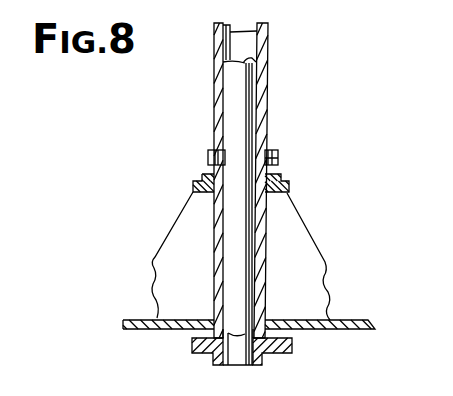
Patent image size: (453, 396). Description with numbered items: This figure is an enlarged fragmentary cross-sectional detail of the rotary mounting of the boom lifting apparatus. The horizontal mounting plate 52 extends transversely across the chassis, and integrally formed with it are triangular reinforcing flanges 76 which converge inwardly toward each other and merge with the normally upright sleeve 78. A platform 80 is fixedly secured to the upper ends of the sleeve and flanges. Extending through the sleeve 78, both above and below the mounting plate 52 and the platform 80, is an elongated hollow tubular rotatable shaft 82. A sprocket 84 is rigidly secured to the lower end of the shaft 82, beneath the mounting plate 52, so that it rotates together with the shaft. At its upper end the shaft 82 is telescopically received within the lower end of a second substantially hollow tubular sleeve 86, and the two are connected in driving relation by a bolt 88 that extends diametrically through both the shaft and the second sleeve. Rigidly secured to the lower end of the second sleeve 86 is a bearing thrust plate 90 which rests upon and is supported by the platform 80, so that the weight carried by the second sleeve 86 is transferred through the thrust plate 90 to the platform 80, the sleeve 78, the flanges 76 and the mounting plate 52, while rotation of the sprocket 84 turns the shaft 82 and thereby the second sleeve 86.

The mounting plate 52 is at (352, 320).
The triangular reinforcing flanges 76 is at (177, 238).
The sleeve 78 is at (217, 240).
The platform 80 is at (193, 185).
The hollow tubular rotatable shaft 82 is at (233, 280).
The sprocket 84 is at (288, 347).
The second tubular sleeve 86 is at (267, 135).
The bolt 88 is at (208, 157).
The bearing thrust plate 90 is at (283, 178).